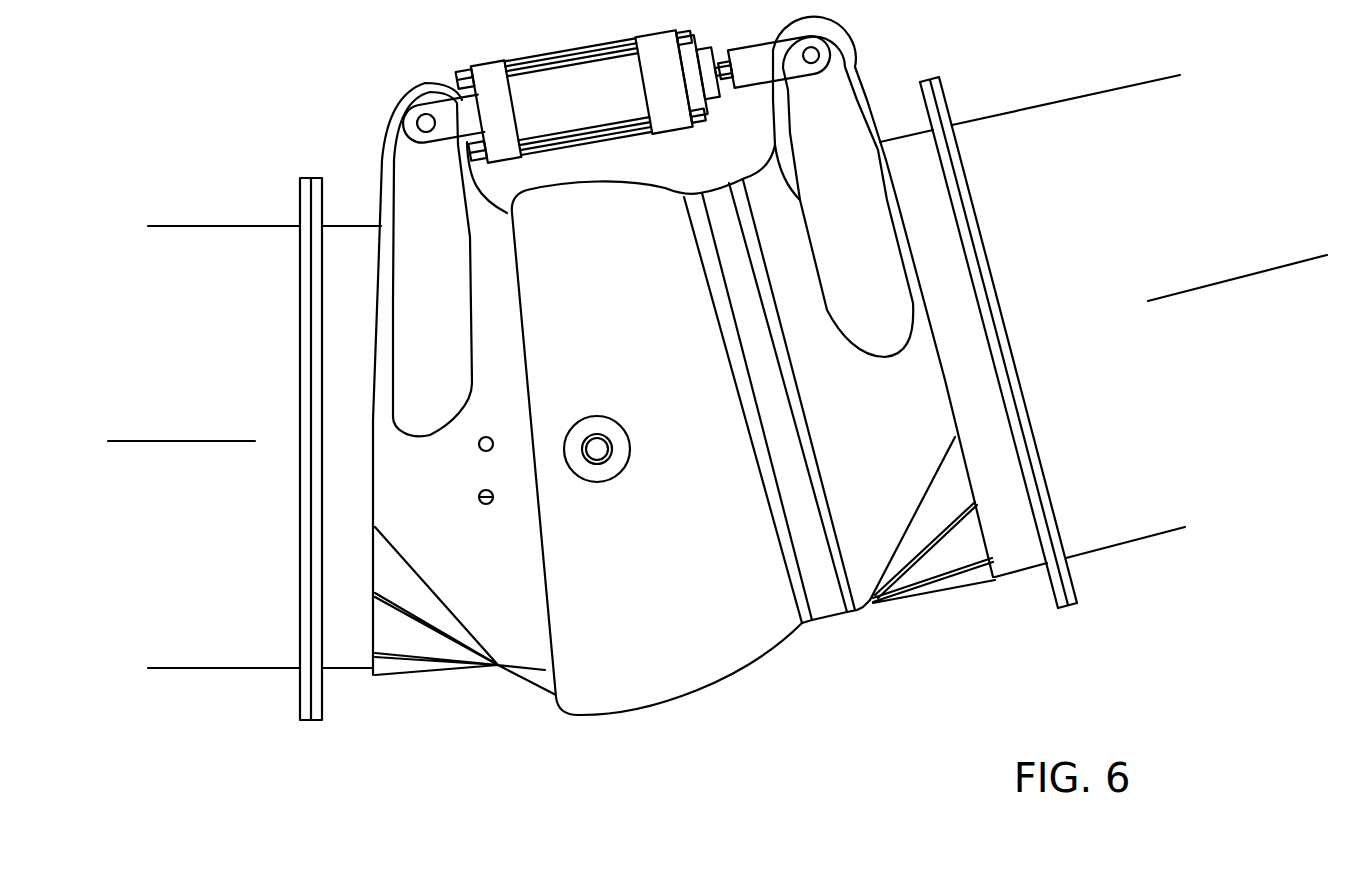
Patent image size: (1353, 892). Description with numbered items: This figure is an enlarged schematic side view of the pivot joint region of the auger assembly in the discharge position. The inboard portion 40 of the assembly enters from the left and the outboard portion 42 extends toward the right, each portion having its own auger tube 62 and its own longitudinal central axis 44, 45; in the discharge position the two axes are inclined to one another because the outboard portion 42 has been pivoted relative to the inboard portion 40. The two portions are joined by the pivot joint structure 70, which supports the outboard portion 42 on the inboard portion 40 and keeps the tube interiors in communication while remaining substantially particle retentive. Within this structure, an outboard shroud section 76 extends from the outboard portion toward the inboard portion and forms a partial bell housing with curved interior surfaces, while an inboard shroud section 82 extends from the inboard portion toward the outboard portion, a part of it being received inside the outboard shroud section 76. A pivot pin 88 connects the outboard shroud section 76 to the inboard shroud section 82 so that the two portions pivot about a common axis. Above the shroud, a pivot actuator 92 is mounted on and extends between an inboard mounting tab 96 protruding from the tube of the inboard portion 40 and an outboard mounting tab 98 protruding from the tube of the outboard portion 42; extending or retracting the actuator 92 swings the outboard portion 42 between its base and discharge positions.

The inboard portion 40 is at (215, 680).
The outboard portion 42 is at (1127, 540).
The central axis 44 is at (150, 450).
The central axis 45 is at (1212, 285).
The auger tube 62 is at (200, 225).
The pivot joint structure 70 is at (618, 780).
The outboard shroud section 76 is at (757, 663).
The inboard shroud section 82 is at (523, 700).
The pivot pin 88 is at (602, 467).
The pivot actuator 92 is at (553, 50).
The inboard mounting tab 96 is at (387, 118).
The outboard mounting tab 98 is at (855, 57).